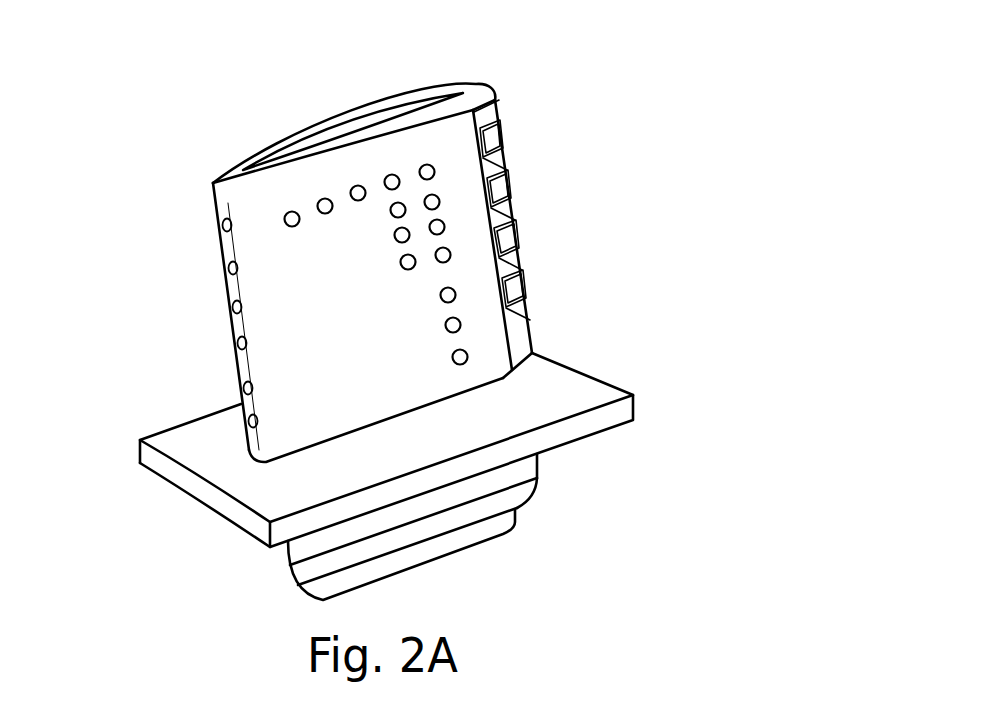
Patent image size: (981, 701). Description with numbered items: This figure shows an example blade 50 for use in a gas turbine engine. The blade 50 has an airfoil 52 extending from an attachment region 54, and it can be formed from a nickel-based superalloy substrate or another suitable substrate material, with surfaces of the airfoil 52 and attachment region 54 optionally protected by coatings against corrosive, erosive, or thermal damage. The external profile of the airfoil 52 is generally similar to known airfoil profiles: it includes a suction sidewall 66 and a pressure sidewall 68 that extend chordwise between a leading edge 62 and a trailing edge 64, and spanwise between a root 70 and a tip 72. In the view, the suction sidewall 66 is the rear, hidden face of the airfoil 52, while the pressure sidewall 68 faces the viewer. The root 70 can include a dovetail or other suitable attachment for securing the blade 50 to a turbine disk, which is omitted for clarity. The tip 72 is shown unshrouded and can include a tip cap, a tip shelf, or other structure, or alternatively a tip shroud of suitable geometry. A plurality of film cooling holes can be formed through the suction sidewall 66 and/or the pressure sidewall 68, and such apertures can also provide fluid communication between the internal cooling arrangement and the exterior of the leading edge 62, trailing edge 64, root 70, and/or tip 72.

The blade 50 is at (604, 77).
The airfoil 52 is at (148, 207).
The attachment region 54 is at (560, 515).
The leading edge 62 is at (227, 327).
The trailing edge 64 is at (570, 302).
The suction sidewall 66 is at (180, 326).
The pressure sidewall 68 is at (320, 290).
The root 70 is at (279, 570).
The tip 72 is at (410, 91).